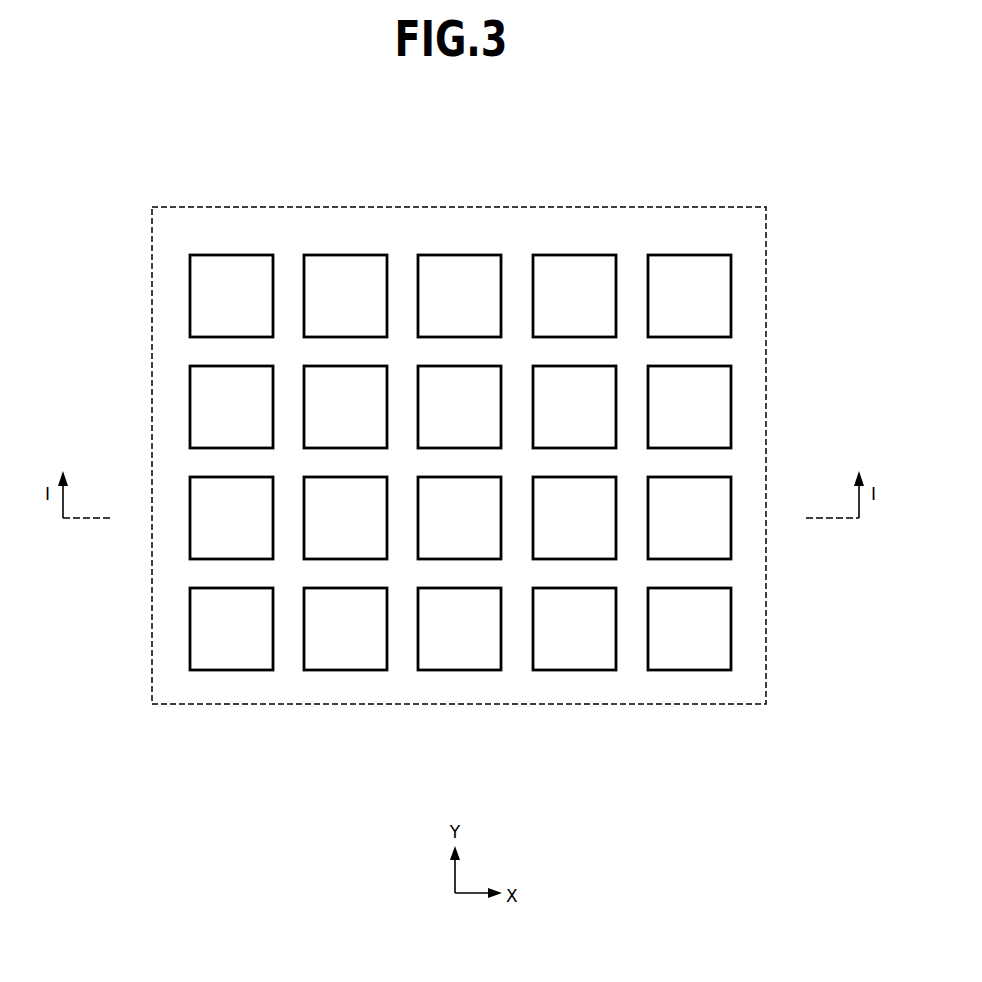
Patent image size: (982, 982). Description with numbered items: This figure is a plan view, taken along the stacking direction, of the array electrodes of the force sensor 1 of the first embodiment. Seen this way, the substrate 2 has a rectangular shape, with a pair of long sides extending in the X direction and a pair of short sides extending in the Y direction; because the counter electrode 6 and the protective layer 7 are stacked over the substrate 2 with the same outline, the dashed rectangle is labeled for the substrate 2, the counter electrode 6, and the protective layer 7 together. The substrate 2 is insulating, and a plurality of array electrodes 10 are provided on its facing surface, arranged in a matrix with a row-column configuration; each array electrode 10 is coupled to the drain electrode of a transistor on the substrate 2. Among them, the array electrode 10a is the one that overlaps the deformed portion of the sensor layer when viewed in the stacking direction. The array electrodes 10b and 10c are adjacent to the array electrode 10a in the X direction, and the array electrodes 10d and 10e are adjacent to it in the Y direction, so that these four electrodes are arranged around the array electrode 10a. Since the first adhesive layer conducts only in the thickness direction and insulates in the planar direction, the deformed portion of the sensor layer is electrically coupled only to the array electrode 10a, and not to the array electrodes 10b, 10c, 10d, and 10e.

The force sensor 1 is at (641, 153).
The substrate 2 is at (183, 222).
The counter electrode 6 is at (459, 455).
The protective layer 7 is at (459, 455).
The array electrodes 10 is at (198, 296).
The array electrode 10a is at (442, 538).
The array electrode 10b is at (333, 538).
The array electrode 10c is at (572, 538).
The array electrode 10d is at (478, 643).
The array electrode 10e is at (485, 403).